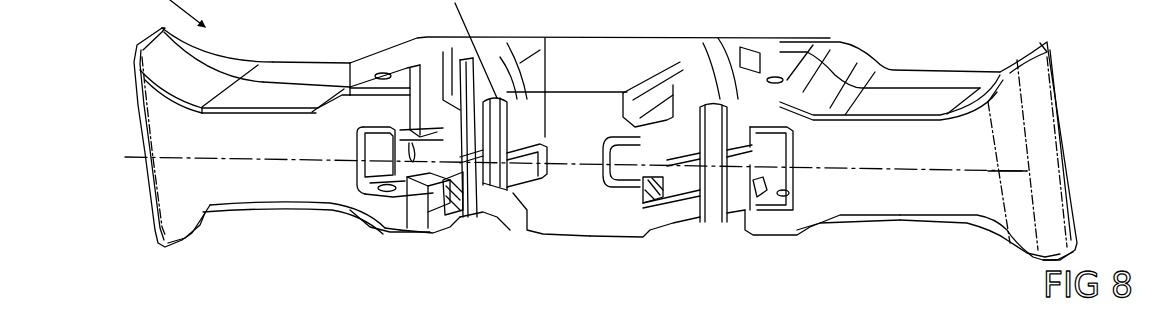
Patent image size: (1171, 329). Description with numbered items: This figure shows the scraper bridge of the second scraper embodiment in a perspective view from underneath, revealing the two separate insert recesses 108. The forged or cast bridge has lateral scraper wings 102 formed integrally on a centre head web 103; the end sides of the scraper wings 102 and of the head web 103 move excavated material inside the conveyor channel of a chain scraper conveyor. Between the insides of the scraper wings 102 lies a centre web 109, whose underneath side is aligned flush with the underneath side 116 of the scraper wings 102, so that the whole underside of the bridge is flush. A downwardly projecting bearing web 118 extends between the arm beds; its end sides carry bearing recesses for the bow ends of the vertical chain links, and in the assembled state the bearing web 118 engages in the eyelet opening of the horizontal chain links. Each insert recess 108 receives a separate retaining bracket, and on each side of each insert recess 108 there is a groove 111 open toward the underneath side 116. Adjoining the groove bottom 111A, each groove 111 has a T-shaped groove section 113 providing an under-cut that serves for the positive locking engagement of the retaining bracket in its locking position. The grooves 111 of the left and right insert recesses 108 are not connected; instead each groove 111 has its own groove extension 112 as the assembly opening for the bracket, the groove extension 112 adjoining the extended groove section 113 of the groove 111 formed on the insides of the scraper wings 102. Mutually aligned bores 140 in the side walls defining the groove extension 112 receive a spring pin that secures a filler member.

The scraper wings 102 is at (260, 88).
The head web 103 is at (580, 62).
The insert recesses 108 is at (512, 230).
The centre web 109 is at (588, 185).
The groove 111 is at (413, 197).
The groove bottom 111A is at (657, 157).
The groove extension 112 is at (372, 152).
The T-shaped groove section 113 is at (460, 190).
The underneath side 116 is at (313, 183).
The bearing web 118 is at (502, 185).
The bores 140 is at (407, 192).